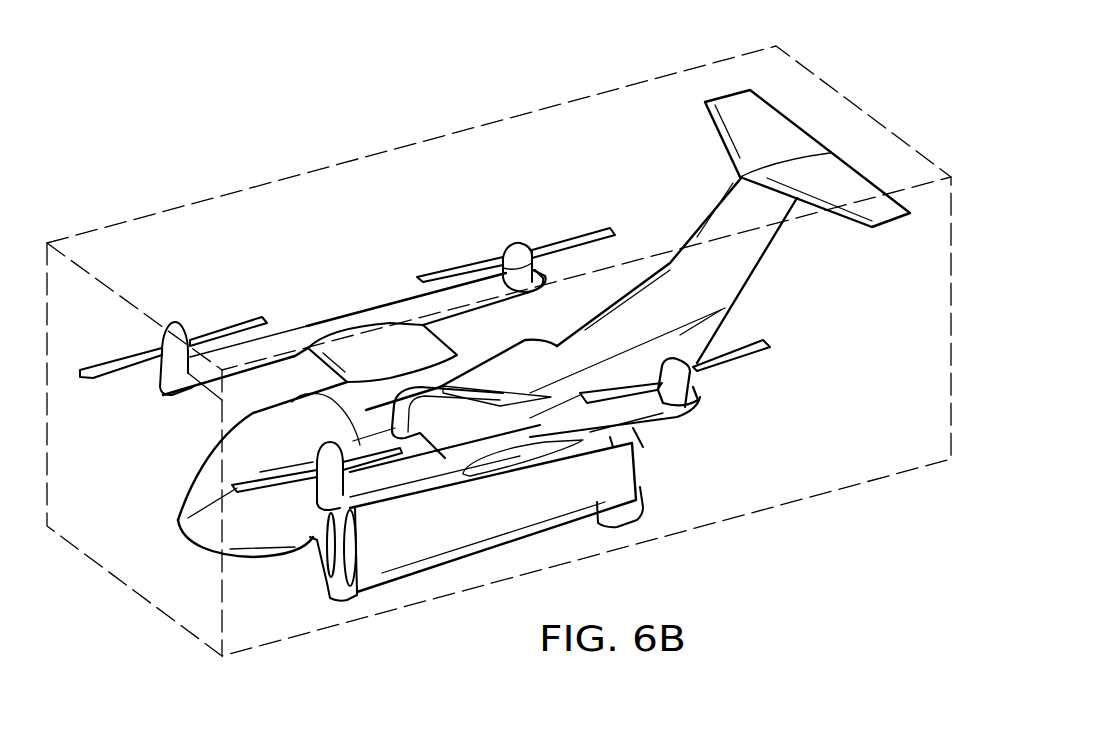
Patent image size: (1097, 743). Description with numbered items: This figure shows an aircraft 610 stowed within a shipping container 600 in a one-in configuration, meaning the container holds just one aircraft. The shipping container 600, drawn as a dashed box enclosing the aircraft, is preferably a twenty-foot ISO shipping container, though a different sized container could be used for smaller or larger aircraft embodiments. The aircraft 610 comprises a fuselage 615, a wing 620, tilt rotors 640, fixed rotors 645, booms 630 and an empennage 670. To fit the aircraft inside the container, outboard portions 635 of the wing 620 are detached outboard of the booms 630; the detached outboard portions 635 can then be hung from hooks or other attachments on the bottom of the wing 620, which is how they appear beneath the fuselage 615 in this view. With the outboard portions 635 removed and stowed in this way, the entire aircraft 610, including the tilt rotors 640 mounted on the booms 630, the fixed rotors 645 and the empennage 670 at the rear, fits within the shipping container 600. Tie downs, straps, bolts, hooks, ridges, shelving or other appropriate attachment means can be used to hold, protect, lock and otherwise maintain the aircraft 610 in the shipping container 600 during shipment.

The shipping container 600 is at (416, 143).
The aircraft 610 is at (156, 493).
The fuselage 615 is at (205, 466).
The wing 620 is at (362, 348).
The booms 630 is at (396, 303).
The outboard portions 635 is at (419, 574).
The tilt rotors 640 is at (233, 323).
The fixed rotors 645 is at (576, 229).
The empennage 670 is at (718, 139).